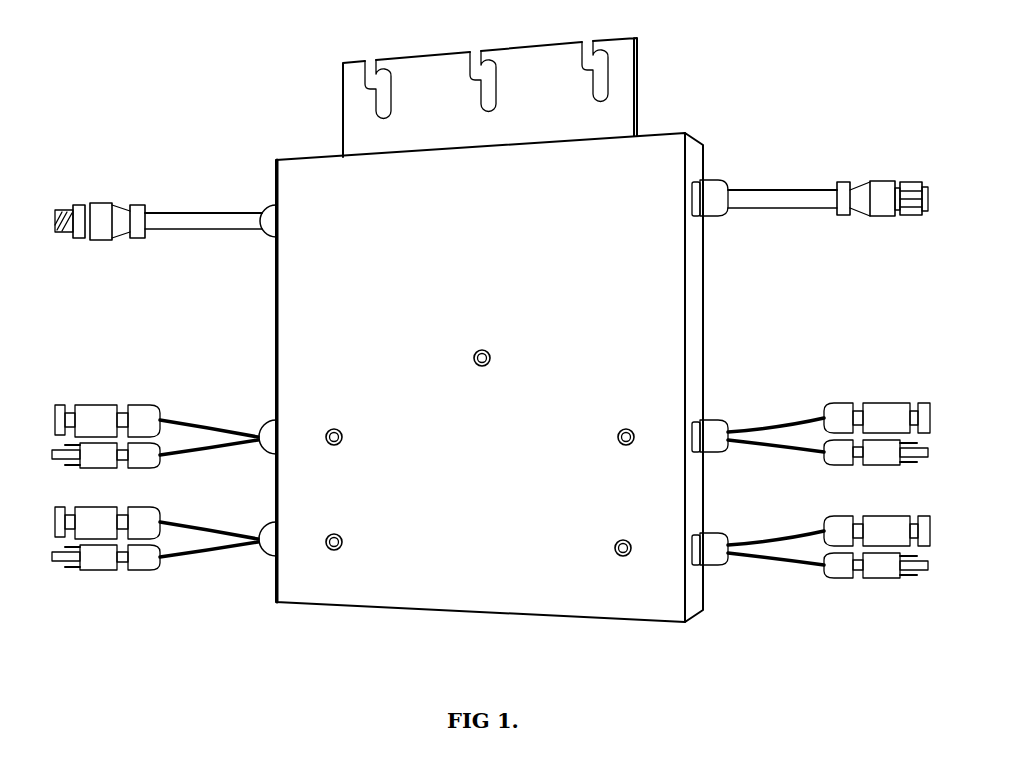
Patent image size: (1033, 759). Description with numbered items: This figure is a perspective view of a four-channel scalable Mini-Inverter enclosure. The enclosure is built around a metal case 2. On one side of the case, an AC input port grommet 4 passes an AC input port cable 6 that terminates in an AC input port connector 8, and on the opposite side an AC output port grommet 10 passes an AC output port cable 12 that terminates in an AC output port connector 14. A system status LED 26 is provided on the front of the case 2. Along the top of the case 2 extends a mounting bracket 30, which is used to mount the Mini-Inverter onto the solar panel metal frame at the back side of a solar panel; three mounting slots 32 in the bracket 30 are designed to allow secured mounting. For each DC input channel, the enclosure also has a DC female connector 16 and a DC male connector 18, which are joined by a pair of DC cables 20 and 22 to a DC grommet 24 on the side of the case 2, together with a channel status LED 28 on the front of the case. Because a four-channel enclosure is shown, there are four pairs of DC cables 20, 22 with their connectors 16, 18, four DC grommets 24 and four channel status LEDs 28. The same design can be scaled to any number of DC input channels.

The metal case 2 is at (662, 148).
The AC input port grommet 4 is at (727, 182).
The AC input port cable 6 is at (762, 188).
The AC input port connector 8 is at (873, 181).
The AC output port grommet 10 is at (262, 206).
The AC output port cable 12 is at (163, 212).
The AC output port connector 14 is at (100, 203).
The DC female connector 16 is at (95, 405).
The DC male connector 18 is at (95, 470).
The DC cable 20 is at (173, 420).
The DC cable 22 is at (176, 458).
The DC grommet 24 is at (262, 423).
The system status LED 26 is at (489, 349).
The channel status LED 28 is at (342, 429).
The mounting bracket 30 is at (490, 82).
The mounting slot 32 is at (367, 63).